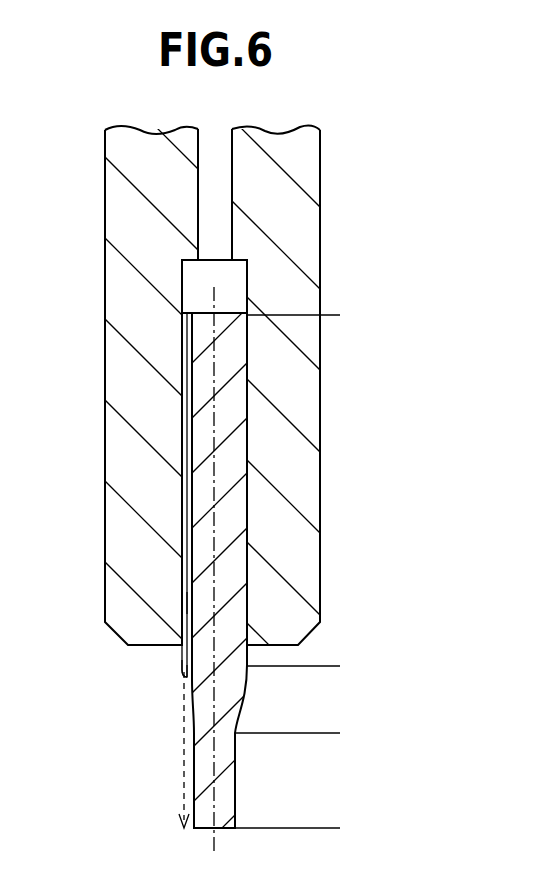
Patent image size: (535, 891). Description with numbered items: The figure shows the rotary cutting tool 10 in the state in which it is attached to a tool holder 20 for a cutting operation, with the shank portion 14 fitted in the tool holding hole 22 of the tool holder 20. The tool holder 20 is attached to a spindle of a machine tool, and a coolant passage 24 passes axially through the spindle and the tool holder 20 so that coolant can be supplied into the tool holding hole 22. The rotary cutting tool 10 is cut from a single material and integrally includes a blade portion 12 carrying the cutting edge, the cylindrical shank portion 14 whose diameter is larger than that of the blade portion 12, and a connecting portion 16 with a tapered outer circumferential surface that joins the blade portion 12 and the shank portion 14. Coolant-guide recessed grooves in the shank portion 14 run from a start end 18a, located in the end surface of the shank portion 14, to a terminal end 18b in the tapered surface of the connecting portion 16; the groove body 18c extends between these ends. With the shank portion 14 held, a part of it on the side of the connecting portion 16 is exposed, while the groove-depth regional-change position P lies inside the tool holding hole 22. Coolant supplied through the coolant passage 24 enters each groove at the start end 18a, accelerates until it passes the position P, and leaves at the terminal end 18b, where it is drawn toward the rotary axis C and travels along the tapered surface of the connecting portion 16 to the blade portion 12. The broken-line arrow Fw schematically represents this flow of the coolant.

The rotary cutting tool 10 is at (267, 445).
The blade portion 12 is at (300, 780).
The shank portion 14 is at (347, 316).
The connecting portion 16 is at (347, 668).
The start end 18a is at (184, 312).
The terminal end 18b is at (188, 712).
The gap body 18c is at (190, 437).
The tool holder 20 is at (386, 292).
The tool holding hole 22 is at (244, 280).
The coolant passage 24 is at (221, 138).
The groove-depth regional-change position P is at (188, 603).
The flow of the coolant Fw is at (180, 757).
The rotary axis C is at (216, 843).